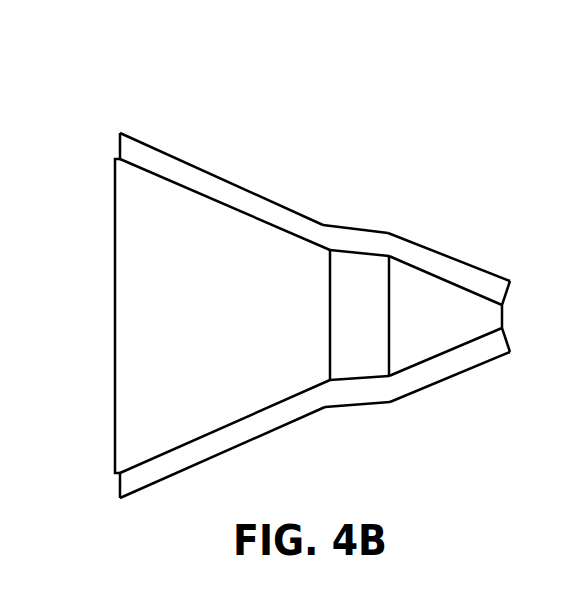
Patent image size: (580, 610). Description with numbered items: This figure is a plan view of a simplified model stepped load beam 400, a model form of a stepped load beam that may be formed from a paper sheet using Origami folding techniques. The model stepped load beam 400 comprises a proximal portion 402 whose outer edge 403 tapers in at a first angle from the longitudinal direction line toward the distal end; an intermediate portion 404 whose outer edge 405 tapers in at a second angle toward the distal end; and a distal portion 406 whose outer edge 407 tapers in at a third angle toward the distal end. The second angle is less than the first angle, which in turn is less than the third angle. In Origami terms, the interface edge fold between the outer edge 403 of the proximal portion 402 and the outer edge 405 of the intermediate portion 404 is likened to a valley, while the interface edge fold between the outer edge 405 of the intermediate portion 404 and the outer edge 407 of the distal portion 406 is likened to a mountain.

The model stepped load beam 400 is at (167, 72).
The proximal portion 402 is at (203, 256).
The outer edge of the proximal portion 403 is at (203, 183).
The intermediate portion 404 is at (377, 288).
The outer edge of the intermediate portion 405 is at (360, 235).
The distal portion 406 is at (445, 324).
The outer edge of the distal portion 407 is at (447, 263).